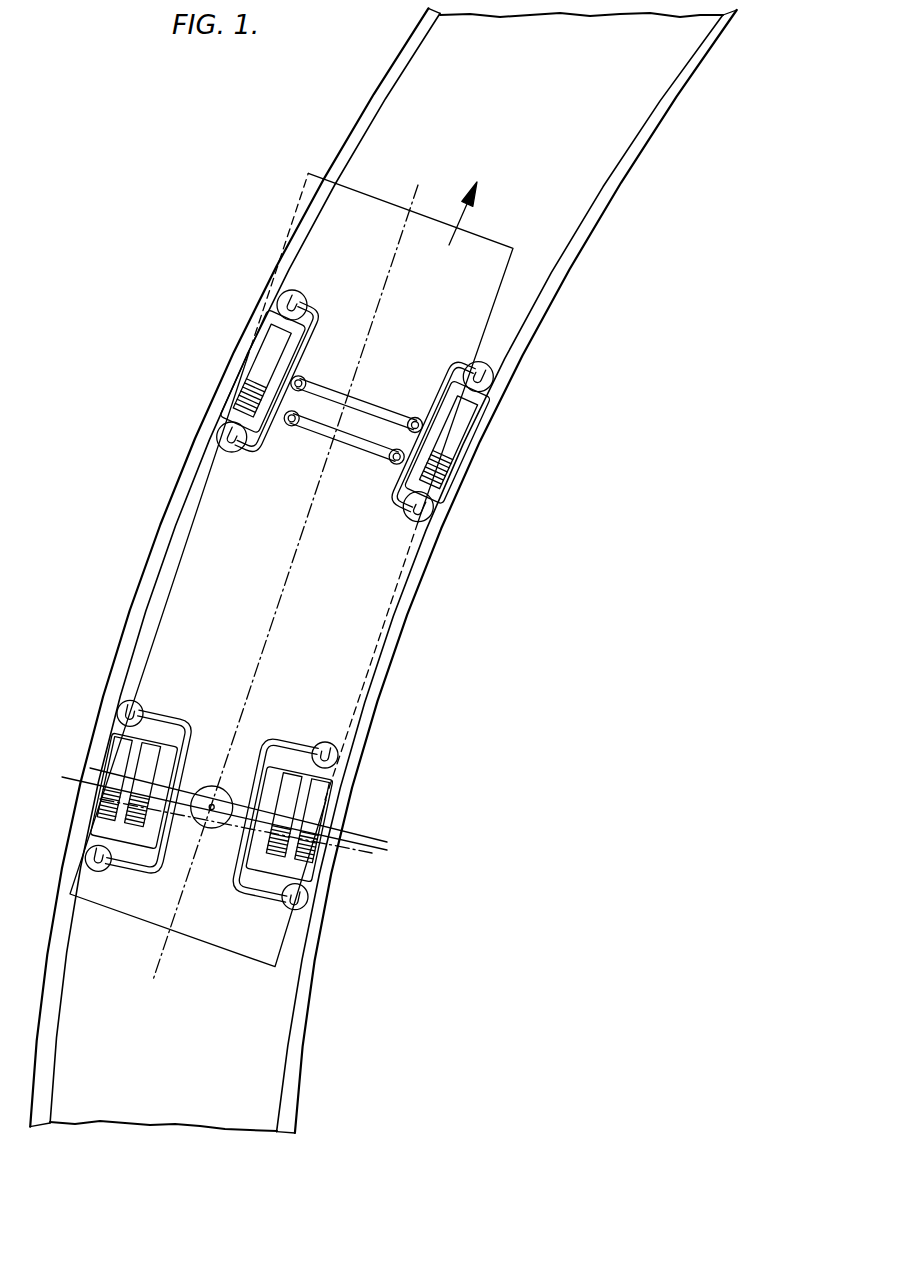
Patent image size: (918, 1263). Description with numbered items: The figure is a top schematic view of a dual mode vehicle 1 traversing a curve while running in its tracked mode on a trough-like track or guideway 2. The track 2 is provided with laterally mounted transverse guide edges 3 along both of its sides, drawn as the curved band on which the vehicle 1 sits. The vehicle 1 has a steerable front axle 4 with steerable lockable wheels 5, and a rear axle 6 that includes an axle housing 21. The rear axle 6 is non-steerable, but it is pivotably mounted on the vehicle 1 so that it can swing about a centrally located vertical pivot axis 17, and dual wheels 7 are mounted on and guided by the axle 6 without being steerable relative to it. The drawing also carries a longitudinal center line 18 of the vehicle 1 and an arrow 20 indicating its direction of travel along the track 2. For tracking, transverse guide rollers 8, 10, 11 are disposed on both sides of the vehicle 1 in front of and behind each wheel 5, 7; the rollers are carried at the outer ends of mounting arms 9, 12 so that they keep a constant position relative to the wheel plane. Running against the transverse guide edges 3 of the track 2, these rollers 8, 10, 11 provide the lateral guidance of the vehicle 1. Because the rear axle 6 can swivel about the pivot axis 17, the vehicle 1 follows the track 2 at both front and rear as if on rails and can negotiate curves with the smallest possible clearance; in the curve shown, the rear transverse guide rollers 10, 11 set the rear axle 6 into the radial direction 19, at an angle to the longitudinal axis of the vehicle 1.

The dual mode vehicle 1 is at (515, 327).
The trough-like track or guideway 2 is at (547, 86).
The transverse guide edges 3 is at (373, 129).
The steerable front axle 4 is at (386, 394).
The steerable lockable wheels 5 is at (453, 472).
The rear axle 6 is at (247, 782).
The dual wheels 7 is at (333, 817).
The transverse guide rollers 8 is at (493, 383).
The mounting arms 9 is at (315, 322).
The transverse guide rollers 10 is at (85, 857).
The transverse guide rollers 11 is at (118, 700).
The mounting arms 12 is at (167, 713).
The vertical pivot axis 17 is at (220, 788).
The longitudinal centerline 18 is at (312, 600).
The radial direction 19 is at (372, 849).
The direction arrow 20 is at (480, 210).
The axle housing 21 is at (234, 838).